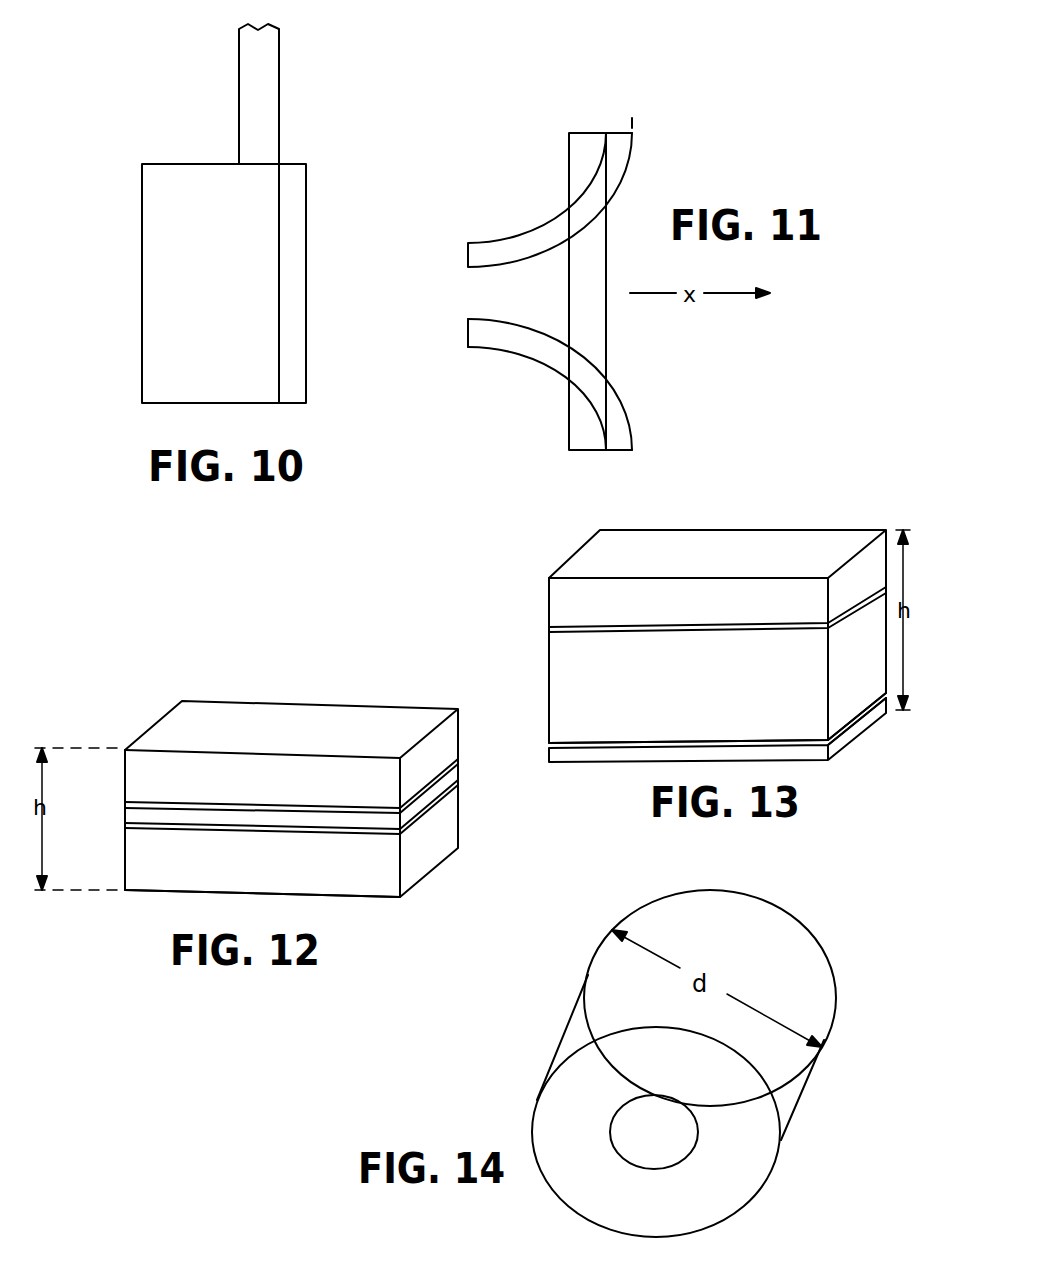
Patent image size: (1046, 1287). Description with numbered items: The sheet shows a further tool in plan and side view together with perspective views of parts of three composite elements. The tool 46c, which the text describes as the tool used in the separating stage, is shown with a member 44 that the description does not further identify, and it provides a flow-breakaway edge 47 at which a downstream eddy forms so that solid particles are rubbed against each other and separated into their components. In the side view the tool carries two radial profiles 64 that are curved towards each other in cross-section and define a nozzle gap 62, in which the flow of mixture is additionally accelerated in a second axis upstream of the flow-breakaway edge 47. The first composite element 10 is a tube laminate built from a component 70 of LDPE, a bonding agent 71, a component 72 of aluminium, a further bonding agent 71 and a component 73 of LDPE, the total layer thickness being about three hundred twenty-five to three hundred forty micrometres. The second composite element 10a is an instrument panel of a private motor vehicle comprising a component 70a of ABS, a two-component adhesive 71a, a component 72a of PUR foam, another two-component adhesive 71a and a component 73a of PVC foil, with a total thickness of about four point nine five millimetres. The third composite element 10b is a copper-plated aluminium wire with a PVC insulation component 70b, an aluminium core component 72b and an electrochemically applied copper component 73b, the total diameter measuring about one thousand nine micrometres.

In FIG. 10, the shaft 44 is at (254, 57).
In FIG. 11, the shaft 44 is at (580, 153).
In FIG. 10, the pressure pad assembly 46c is at (332, 161).
In FIG. 11, the pressure pad assembly 46c is at (674, 121).
In FIG. 10, the flow-breakaway edge 47 is at (142, 330).
In FIG. 11, the flow-breakaway edge 47 is at (470, 322).
In FIG. 11, the nozzle gap 62 is at (522, 292).
In FIG. 10, the radial profiles 64 is at (236, 283).
In FIG. 11, the radial profiles 64 is at (485, 252).
In FIG. 12, the composite element 10 is at (319, 680).
In FIG. 12, the component 70 is at (140, 770).
In FIG. 12, the bonding agent 71 is at (460, 777).
In FIG. 12, the component 72 is at (460, 777).
In FIG. 12, the component 73 is at (140, 847).
In FIG. 13, the composite element 10a is at (735, 508).
In FIG. 13, the component 70a is at (558, 602).
In FIG. 13, the 2-component adhesive 71a is at (865, 797).
In FIG. 13, the component 72a is at (560, 678).
In FIG. 13, the component 73a is at (603, 755).
In FIG. 14, the composite element 10b is at (752, 911).
In FIG. 14, the component 70b is at (813, 983).
In FIG. 14, the component 72b is at (628, 1123).
In FIG. 14, the component 73b is at (692, 1153).